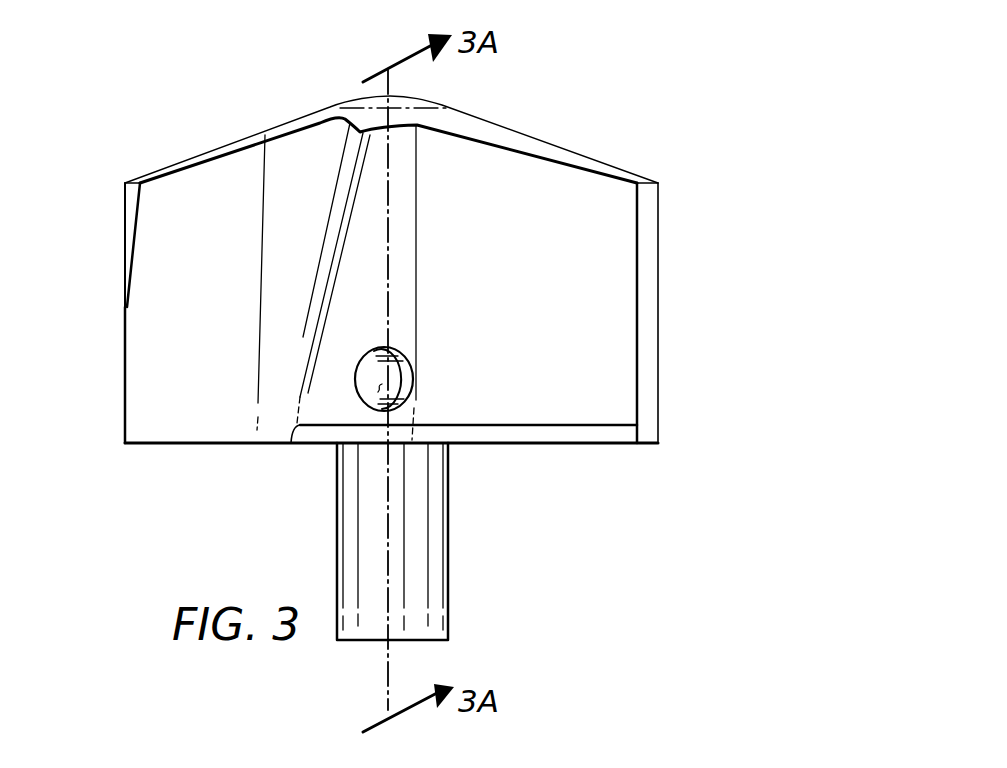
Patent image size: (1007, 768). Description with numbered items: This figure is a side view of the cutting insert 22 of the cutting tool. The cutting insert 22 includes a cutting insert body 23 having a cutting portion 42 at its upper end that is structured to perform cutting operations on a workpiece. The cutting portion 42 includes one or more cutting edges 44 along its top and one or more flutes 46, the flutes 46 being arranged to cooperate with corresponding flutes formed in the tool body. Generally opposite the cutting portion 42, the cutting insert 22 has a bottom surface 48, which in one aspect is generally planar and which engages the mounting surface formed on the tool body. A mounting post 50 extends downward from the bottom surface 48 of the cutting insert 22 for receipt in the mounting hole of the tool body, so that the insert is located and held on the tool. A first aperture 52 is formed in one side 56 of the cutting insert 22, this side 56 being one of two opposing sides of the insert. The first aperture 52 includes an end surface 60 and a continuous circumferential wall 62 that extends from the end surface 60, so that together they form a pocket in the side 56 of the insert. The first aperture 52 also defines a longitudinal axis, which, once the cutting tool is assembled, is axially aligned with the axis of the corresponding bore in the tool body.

The cutting insert 22 is at (454, 269).
The cutting insert body 23 is at (674, 330).
The cutting portion 42 is at (508, 116).
The cutting edge 44 is at (222, 153).
The flute 46 is at (160, 367).
The bottom surface 48 is at (540, 443).
The mounting post 50 is at (448, 572).
The first aperture 52 is at (414, 382).
The side 56 is at (603, 276).
The end surface 60 is at (363, 374).
The continuous circumferential wall 62 is at (400, 392).